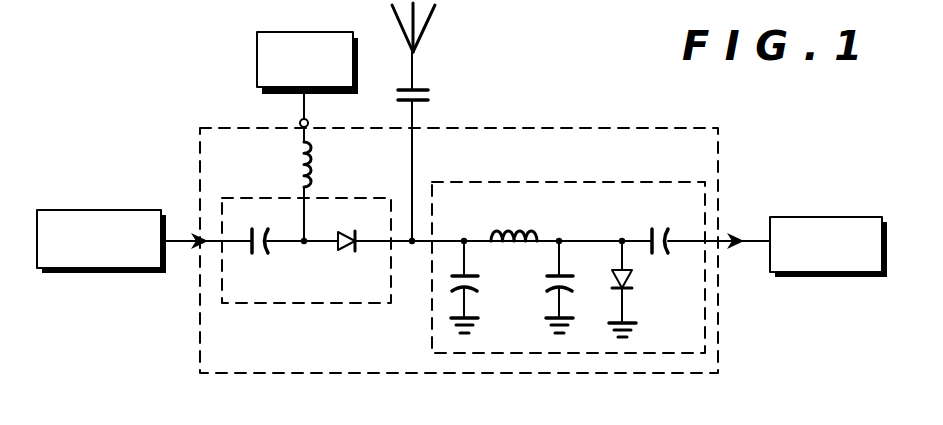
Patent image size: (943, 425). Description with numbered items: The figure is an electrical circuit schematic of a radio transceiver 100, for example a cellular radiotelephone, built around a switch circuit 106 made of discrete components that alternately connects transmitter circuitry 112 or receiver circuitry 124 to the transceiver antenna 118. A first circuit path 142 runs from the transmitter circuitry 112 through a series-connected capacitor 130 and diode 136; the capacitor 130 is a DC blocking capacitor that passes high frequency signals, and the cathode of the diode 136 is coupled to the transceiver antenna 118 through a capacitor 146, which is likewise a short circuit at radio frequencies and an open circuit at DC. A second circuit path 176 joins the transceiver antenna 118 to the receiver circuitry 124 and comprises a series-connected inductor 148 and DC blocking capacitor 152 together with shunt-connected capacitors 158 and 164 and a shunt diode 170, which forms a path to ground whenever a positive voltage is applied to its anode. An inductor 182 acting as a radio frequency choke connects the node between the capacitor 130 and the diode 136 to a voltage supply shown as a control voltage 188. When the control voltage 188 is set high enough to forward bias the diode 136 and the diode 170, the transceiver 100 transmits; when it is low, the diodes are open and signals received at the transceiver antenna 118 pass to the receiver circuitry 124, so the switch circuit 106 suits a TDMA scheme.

The radio transceiver 100 is at (801, 112).
The switch circuit 106 is at (568, 128).
The transmitter circuitry 112 is at (93, 210).
The transceiver antenna 118 is at (428, 24).
The receiver circuitry 124 is at (826, 217).
The capacitor 130 is at (260, 256).
The diode 136 is at (355, 257).
The first circuit path 142 is at (292, 304).
The capacitor 146 is at (428, 98).
The inductor 148 is at (513, 229).
The capacitor 152 is at (660, 230).
The capacitor 158 is at (480, 281).
The capacitor 164 is at (549, 291).
The diode 170 is at (634, 290).
The second circuit path 176 is at (432, 310).
The inductor 182 is at (318, 163).
The control voltage 188 is at (257, 57).